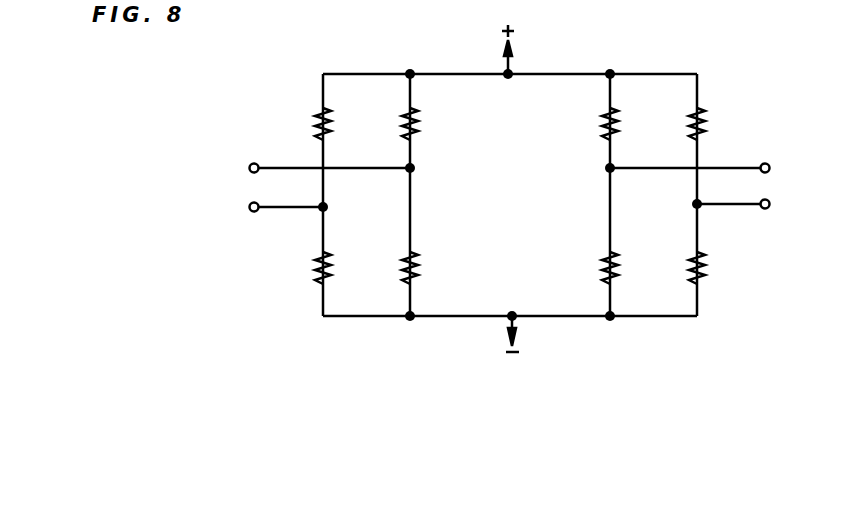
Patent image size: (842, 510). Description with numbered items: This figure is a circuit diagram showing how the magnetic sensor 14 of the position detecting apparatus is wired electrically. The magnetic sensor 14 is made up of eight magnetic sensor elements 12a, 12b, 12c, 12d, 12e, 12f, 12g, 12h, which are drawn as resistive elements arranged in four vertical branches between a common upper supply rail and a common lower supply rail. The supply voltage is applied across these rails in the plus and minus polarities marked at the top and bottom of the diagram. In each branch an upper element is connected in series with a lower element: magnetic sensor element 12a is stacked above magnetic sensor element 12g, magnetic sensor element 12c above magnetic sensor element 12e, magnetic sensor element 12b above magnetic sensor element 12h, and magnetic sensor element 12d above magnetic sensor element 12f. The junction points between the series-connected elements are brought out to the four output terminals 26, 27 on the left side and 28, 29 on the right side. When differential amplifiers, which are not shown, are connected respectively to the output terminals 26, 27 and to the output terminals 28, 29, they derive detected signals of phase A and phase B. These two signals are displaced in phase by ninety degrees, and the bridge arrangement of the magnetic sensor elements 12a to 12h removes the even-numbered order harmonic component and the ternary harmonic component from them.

The magnetic sensor 14 is at (660, 70).
The magnetic sensor element 12a is at (331, 124).
The magnetic sensor element 12b is at (604, 124).
The magnetic sensor element 12c is at (418, 124).
The magnetic sensor element 12d is at (705, 124).
The magnetic sensor element 12e is at (418, 268).
The magnetic sensor element 12f is at (705, 268).
The magnetic sensor element 12g is at (331, 268).
The magnetic sensor element 12h is at (604, 264).
The output terminal 26 is at (249, 165).
The output terminal 27 is at (250, 210).
The output terminal 28 is at (769, 164).
The output terminal 29 is at (769, 208).